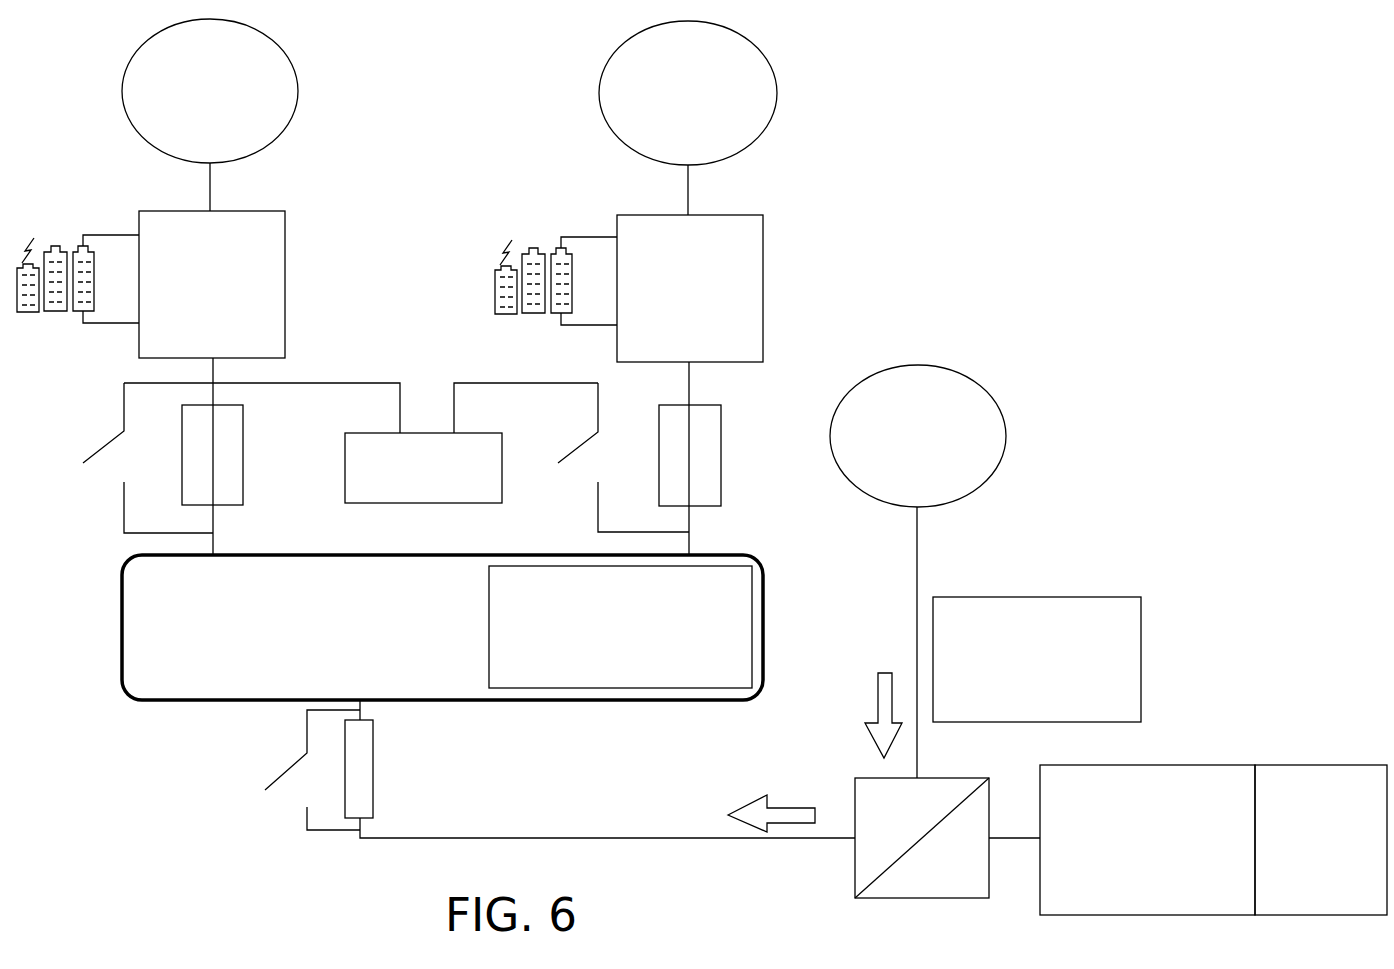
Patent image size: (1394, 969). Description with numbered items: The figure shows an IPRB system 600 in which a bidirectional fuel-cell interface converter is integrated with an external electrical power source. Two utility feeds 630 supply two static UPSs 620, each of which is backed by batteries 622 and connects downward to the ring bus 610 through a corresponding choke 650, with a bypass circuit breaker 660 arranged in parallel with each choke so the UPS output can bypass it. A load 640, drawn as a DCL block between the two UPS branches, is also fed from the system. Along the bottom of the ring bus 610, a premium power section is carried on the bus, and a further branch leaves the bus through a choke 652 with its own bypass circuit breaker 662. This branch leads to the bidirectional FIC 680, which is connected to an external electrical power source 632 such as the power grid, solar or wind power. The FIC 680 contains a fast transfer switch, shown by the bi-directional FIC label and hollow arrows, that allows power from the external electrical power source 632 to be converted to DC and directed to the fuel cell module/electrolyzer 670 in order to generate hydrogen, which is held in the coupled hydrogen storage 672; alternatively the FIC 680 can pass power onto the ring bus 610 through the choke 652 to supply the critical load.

The IPRB system 600 is at (978, 127).
The ring bus 610 is at (182, 722).
The static UPSs 620 is at (310, 243).
The batteries 622 is at (49, 232).
The utility feeds 630 is at (560, 80).
The external electrical power source 632 is at (983, 372).
The loads 640 is at (413, 420).
The chokes 650 is at (262, 473).
The choke 652 is at (387, 775).
The bypass circuit breakers 660 is at (107, 467).
The bypass circuit breaker 662 is at (293, 792).
The fuel cell module/electrolyzer 670 is at (1155, 753).
The hydrogen storage 672 is at (1317, 753).
The bidirectional FIC 680 is at (850, 858).